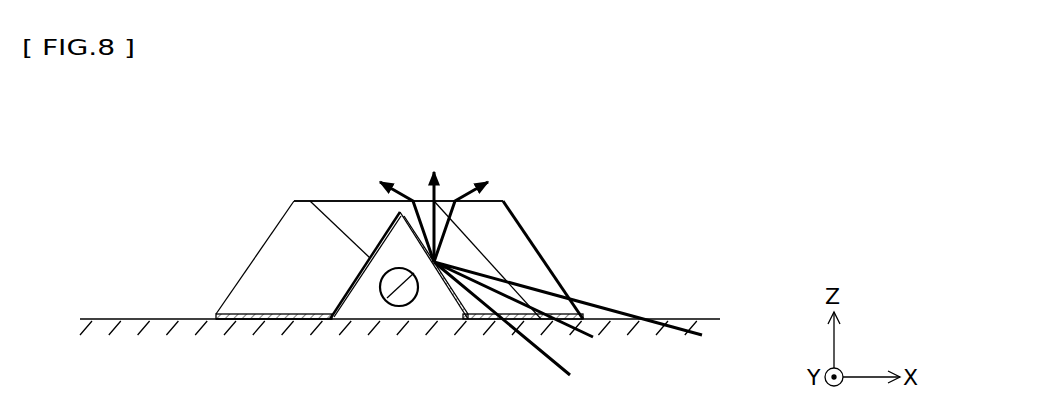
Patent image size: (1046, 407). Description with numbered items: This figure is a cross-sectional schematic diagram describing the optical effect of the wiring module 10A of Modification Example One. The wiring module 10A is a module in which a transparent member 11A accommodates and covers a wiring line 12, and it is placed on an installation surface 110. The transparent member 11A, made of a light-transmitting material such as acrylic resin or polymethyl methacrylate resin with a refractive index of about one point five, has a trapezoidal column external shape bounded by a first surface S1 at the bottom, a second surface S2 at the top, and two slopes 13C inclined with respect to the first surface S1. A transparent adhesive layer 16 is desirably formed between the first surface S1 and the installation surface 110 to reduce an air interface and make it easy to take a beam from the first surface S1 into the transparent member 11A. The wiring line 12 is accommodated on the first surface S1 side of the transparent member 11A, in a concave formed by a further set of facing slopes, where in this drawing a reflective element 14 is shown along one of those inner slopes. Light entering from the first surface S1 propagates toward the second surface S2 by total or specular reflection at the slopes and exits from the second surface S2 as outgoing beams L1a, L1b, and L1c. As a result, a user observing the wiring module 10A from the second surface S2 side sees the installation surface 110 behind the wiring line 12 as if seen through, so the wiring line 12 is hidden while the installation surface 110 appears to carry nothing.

The wiring module 10A is at (555, 172).
The transparent member 11A is at (495, 225).
The wiring line 12 is at (383, 300).
The slopes 13C is at (250, 263).
The reflective film 14 is at (370, 254).
The transparent adhesive layer 16 is at (235, 322).
The installation surface 110 is at (138, 319).
The first surface S1 is at (288, 322).
The second surface S2 is at (302, 200).
The outgoing beam L1a is at (401, 207).
The outgoing beam L1b is at (432, 202).
The outgoing beam L1c is at (471, 207).